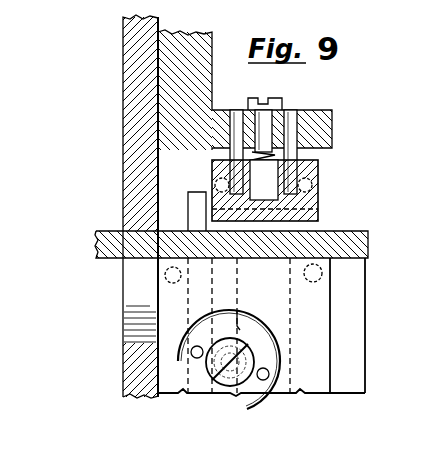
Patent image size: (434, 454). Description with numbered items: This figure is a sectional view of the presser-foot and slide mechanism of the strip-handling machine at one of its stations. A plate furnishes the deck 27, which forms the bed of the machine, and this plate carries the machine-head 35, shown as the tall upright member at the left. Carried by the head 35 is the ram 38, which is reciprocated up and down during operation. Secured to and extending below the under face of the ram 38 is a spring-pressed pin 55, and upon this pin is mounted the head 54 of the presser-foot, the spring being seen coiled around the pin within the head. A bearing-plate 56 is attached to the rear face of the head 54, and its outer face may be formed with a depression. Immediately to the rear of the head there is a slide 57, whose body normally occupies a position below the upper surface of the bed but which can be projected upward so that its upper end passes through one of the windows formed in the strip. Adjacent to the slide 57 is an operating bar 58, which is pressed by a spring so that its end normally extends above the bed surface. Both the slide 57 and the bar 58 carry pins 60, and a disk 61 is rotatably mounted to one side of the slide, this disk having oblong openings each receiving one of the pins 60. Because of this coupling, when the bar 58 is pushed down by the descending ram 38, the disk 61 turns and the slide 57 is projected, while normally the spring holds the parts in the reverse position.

The deck 27 is at (366, 246).
The machine-head 35 is at (128, 87).
The ram 38 is at (187, 37).
The head 54 is at (310, 188).
The spring-pressed pin 55 is at (274, 102).
The bearing-plate 56 is at (306, 207).
The slide 57 is at (291, 282).
The operating bar 58 is at (193, 195).
The pins 60 is at (193, 348).
The disk 61 is at (250, 327).